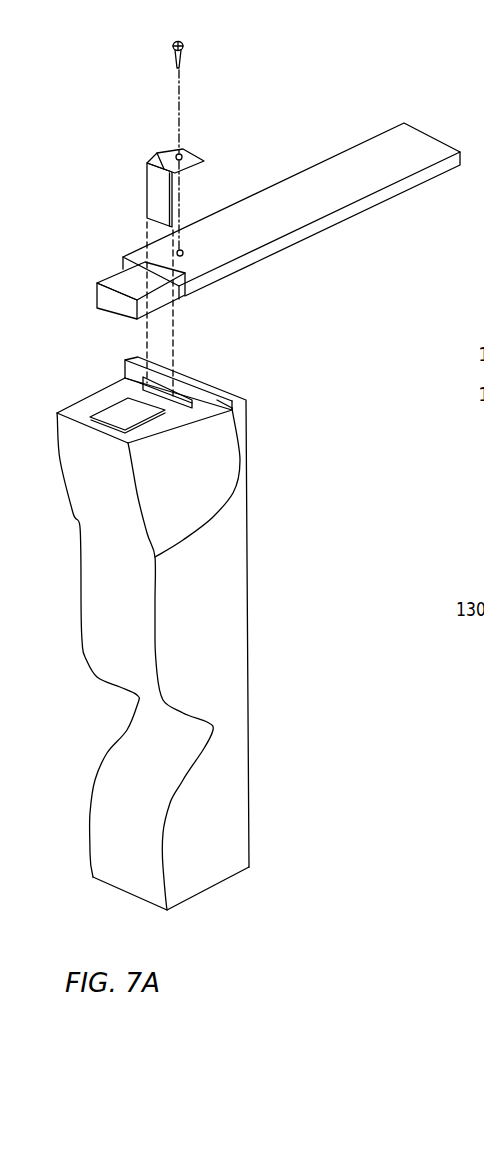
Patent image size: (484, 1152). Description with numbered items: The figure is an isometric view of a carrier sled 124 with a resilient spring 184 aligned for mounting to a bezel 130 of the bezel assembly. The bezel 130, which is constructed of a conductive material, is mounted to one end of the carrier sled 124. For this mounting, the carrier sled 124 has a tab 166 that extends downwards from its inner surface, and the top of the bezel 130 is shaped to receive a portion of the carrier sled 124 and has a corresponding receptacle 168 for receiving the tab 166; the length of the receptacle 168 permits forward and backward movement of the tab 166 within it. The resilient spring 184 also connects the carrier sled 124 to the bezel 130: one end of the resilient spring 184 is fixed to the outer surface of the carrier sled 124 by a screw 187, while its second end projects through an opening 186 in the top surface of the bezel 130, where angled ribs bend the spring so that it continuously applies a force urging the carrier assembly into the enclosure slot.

The carrier sled 124 is at (312, 182).
The bezel 130 is at (230, 692).
The tab 166 is at (100, 297).
The receptacle 168 is at (110, 410).
The resilient spring 184 is at (155, 188).
The opening 186 is at (135, 385).
The screw 187 is at (193, 50).